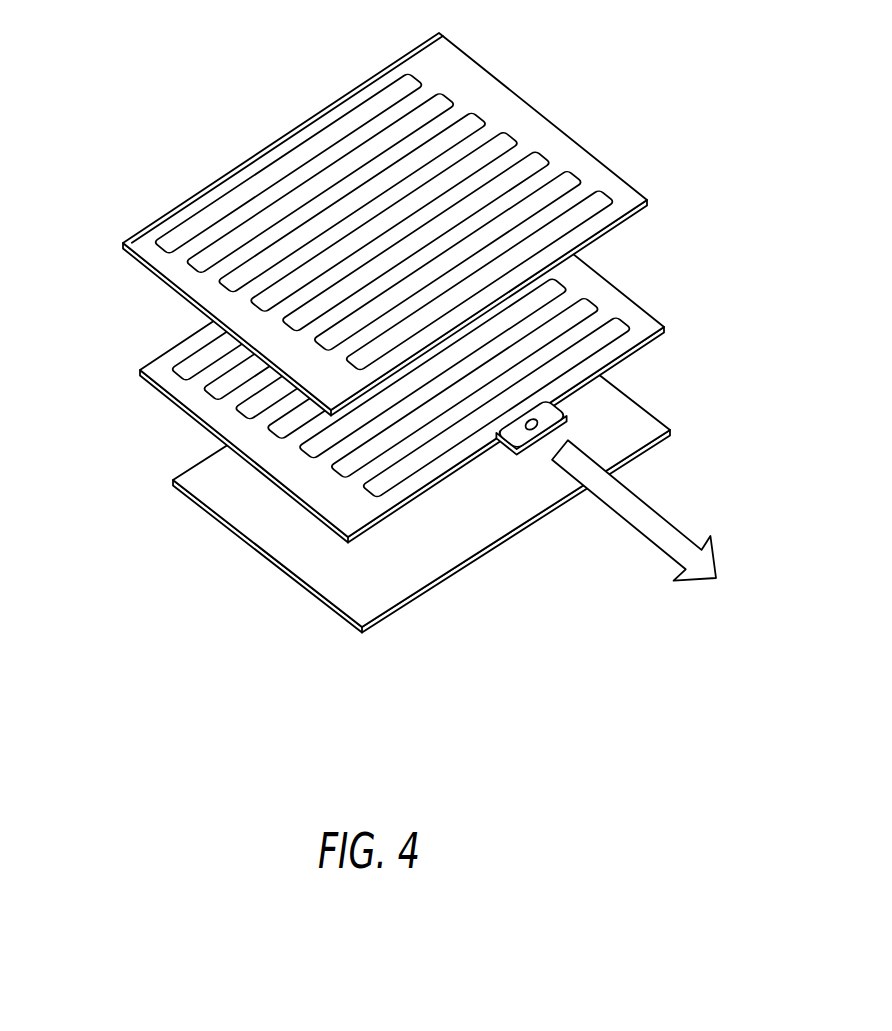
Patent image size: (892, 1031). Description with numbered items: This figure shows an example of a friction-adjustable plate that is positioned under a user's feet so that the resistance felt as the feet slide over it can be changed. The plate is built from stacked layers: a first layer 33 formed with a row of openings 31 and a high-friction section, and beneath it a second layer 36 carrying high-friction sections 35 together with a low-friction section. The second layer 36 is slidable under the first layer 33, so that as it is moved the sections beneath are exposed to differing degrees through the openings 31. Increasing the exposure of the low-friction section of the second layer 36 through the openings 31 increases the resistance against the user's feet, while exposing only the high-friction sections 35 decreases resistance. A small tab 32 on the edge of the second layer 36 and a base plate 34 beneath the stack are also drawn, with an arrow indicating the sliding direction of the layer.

The openings 31 is at (322, 140).
The tab 32 is at (553, 410).
The first layer 33 is at (570, 150).
The base plate 34 is at (427, 560).
The high-friction sections 35 is at (608, 332).
The second layer 36 is at (160, 367).